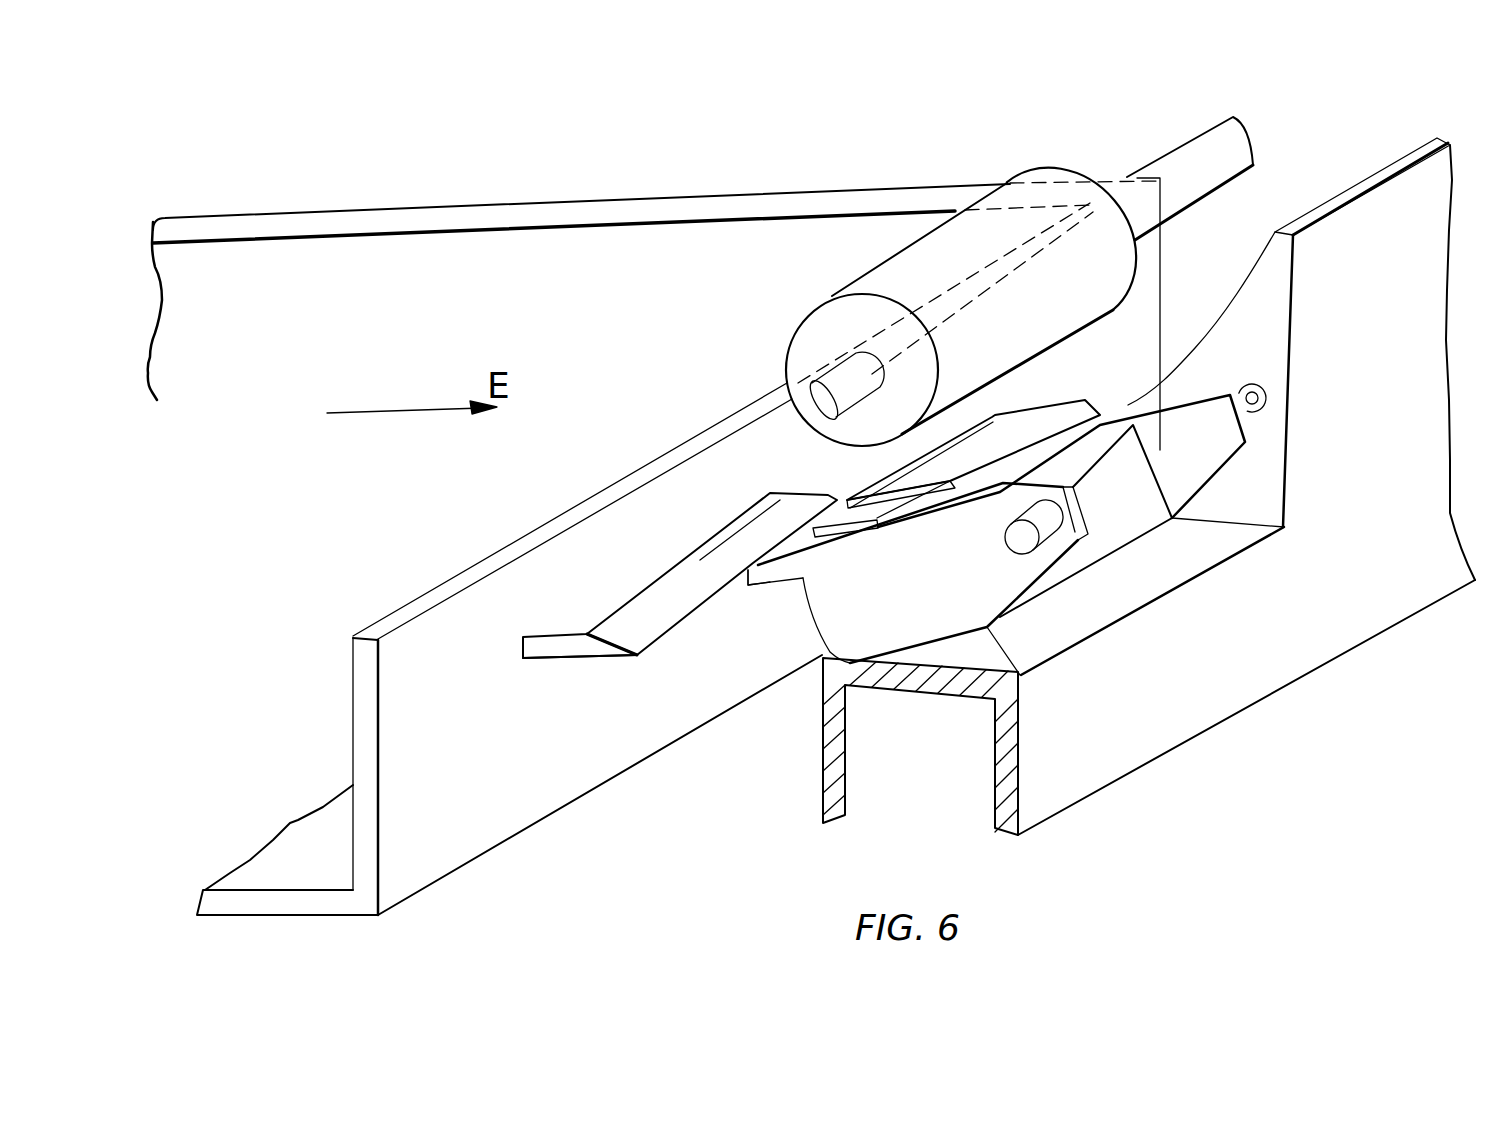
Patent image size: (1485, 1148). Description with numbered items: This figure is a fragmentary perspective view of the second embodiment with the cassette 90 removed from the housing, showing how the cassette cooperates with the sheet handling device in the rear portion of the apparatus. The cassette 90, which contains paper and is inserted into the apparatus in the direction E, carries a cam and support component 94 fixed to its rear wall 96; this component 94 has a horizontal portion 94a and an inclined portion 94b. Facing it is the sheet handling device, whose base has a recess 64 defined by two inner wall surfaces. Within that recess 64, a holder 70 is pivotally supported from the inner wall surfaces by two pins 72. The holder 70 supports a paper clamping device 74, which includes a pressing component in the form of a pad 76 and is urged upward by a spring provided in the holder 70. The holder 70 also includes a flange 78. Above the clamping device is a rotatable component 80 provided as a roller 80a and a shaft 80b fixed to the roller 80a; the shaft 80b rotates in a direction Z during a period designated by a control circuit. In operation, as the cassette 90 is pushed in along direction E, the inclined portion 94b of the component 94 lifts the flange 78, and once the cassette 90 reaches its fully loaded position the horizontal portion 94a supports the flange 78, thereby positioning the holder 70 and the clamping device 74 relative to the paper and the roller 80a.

The recess 64 is at (1210, 538).
The holder 70 is at (1122, 585).
The pins 72 is at (1046, 530).
The paper clamping device 74 is at (1127, 407).
The pad 76 is at (1018, 418).
The flange 78 is at (750, 587).
The rotatable component 80 is at (933, 202).
The roller 80a is at (1058, 195).
The shaft 80b is at (1183, 160).
The cassette 90 is at (640, 190).
The cam and support component 94 is at (533, 670).
The horizontal portion 94a is at (637, 592).
The inclined portion 94b is at (647, 615).
The rear wall 96 is at (512, 795).